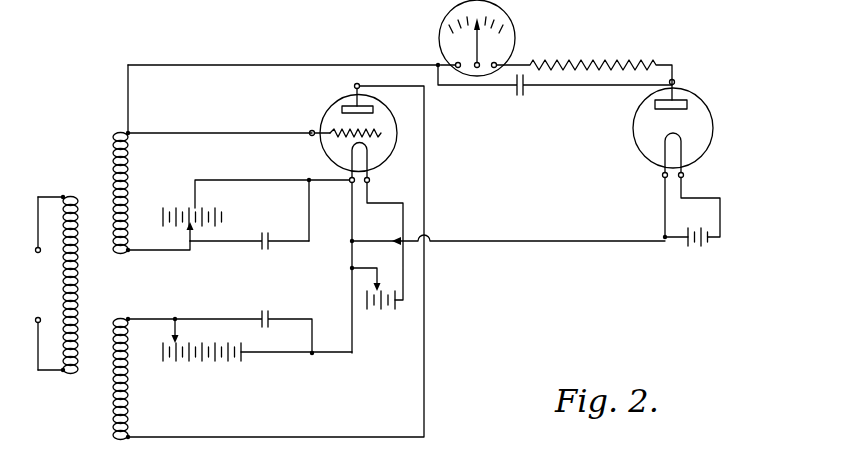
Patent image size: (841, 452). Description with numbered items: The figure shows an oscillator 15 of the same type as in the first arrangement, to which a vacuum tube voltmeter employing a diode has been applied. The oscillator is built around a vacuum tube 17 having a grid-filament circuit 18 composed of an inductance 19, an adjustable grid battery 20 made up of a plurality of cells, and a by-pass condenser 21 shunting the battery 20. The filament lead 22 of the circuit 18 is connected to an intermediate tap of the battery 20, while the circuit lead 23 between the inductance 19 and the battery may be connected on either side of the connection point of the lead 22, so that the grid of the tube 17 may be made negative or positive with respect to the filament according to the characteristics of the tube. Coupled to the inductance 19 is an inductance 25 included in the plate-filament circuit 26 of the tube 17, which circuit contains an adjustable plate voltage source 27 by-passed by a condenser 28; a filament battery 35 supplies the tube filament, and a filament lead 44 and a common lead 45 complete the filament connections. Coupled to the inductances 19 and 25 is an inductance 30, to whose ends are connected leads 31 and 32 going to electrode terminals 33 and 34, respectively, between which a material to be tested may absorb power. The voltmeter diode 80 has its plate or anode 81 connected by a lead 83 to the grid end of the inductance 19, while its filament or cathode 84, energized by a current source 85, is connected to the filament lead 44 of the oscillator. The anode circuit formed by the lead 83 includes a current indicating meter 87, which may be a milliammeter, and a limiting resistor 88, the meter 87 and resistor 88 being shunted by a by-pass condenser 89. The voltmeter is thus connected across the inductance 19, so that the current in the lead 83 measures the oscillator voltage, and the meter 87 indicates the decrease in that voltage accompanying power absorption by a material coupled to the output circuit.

The oscillator circuit 15 is at (118, 112).
The vacuum tube 17 is at (323, 116).
The grid-filament circuit 18 is at (222, 133).
The inductance 19 is at (113, 167).
The adjustable grid battery 20 is at (163, 208).
The by-pass condenser 21 is at (265, 233).
The filament lead 22 is at (228, 181).
The circuit lead 23 is at (146, 250).
The inductance 25 is at (114, 392).
The plate-filament circuit 26 is at (428, 342).
The adjustable plate voltage source 27 is at (210, 362).
The condenser 28 is at (277, 318).
The inductance 30 is at (78, 288).
The lead 31 is at (50, 197).
The lead 32 is at (52, 372).
The electrode terminal 33 is at (36, 252).
The electrode terminal 34 is at (36, 320).
The filament battery 35 is at (378, 312).
The filament lead 44 is at (351, 240).
The common lead 45 is at (530, 238).
The diode tube 80 is at (712, 122).
The plate or anode 81 is at (655, 104).
The lead 83 is at (272, 65).
The filament or cathode 84 is at (665, 152).
The current source 85 is at (700, 252).
The current indicating meter 87 is at (438, 32).
The limiting resistor 88 is at (590, 58).
The by-pass condenser 89 is at (510, 100).